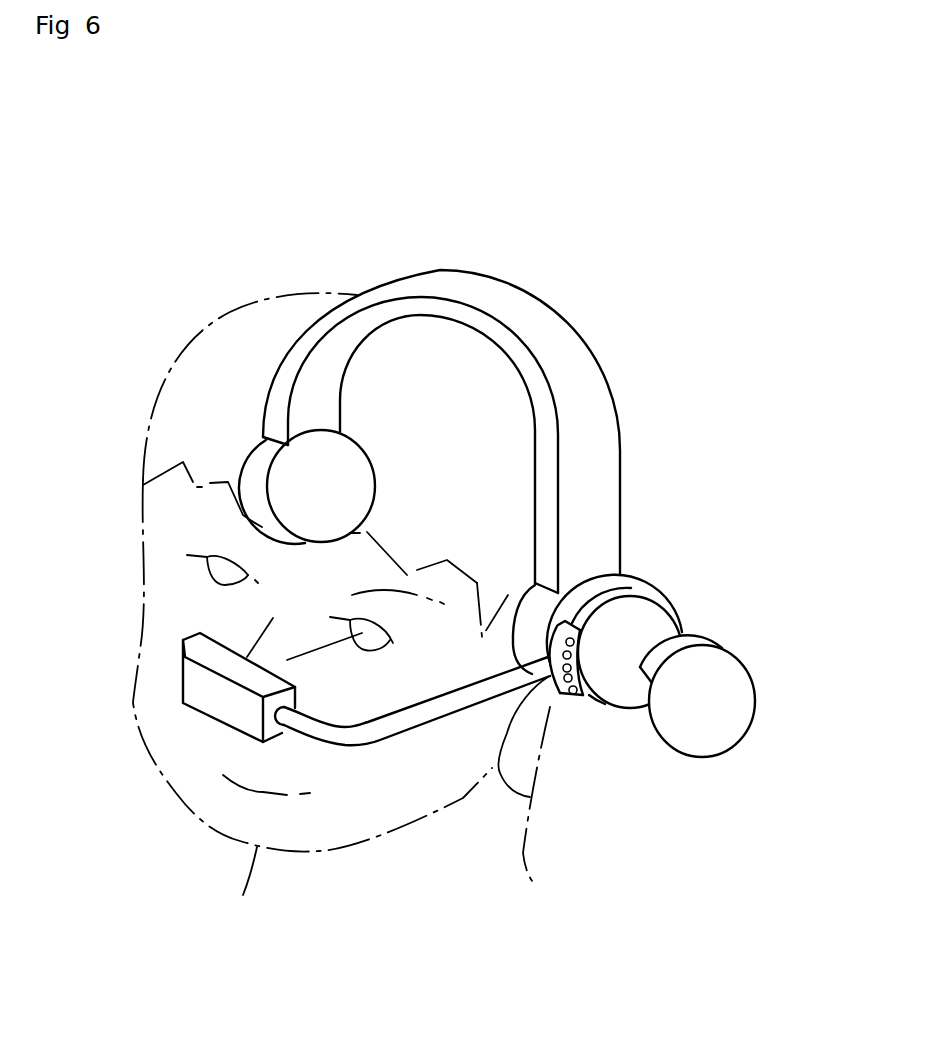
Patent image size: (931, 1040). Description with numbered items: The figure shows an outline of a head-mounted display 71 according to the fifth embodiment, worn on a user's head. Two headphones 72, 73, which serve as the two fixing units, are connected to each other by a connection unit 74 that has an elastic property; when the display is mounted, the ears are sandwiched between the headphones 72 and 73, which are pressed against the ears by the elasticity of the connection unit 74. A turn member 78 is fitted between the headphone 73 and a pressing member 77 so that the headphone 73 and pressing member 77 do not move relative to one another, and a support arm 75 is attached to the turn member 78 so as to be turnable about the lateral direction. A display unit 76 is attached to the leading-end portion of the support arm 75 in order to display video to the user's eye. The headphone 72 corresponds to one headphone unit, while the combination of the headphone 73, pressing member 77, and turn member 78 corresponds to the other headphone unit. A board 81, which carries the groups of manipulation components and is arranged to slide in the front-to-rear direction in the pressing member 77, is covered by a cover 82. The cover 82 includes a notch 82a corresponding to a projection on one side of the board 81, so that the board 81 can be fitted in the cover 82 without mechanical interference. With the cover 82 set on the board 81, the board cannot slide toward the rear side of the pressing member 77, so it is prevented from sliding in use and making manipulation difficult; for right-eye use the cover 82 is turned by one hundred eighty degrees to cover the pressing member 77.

The head-mounted display 71 is at (663, 348).
The headphone 72 is at (337, 475).
The headphone 73 is at (518, 594).
The connection unit 74 is at (612, 453).
The support arm 75 is at (463, 703).
The display unit 76 is at (222, 713).
The pressing member 77 is at (658, 614).
The turn member 78 is at (616, 583).
The board 81 is at (552, 703).
The cover 82 is at (727, 708).
The notch 82a is at (655, 740).